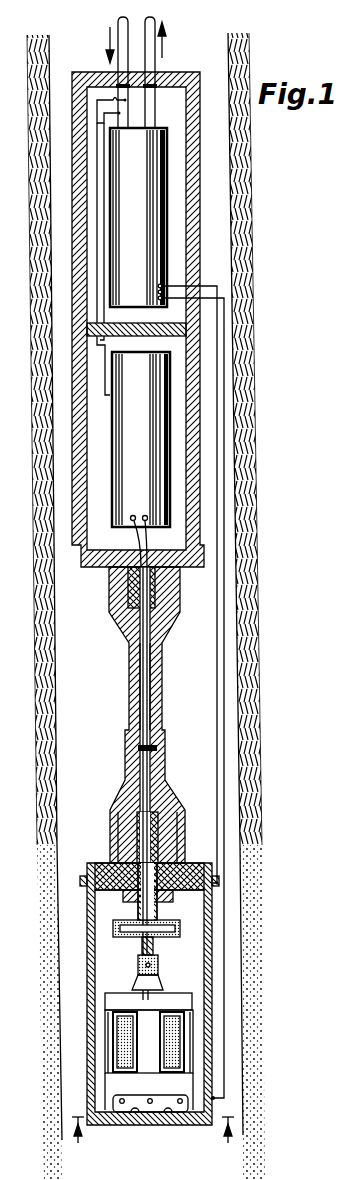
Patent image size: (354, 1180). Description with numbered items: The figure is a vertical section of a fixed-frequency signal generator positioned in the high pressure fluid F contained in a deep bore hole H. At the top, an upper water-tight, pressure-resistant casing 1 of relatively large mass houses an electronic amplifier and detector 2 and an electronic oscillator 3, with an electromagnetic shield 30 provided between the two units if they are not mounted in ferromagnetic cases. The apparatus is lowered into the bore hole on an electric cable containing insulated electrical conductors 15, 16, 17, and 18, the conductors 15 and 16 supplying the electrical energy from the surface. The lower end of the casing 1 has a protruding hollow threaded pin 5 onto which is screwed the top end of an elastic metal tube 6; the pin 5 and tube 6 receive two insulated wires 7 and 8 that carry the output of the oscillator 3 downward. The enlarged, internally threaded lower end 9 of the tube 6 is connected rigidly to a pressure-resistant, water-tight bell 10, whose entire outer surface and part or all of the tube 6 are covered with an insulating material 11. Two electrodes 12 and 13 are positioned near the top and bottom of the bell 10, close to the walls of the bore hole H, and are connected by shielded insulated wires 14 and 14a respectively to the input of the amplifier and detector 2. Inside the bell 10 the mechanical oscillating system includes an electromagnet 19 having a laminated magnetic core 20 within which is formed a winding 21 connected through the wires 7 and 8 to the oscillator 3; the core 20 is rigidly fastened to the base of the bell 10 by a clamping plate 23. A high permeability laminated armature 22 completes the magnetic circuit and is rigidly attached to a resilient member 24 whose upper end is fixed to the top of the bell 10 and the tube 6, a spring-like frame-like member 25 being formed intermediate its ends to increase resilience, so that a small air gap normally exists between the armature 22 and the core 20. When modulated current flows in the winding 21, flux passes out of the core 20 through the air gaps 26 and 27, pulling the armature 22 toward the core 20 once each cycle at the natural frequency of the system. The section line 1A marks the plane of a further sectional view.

The casing 1 is at (203, 470).
The amplifier and detector 2 is at (165, 192).
The oscillator 3 is at (168, 408).
The hollow threaded pin 5 is at (140, 612).
The metal tube 6 is at (158, 712).
The insulated wire 7 is at (156, 682).
The insulated wire 8 is at (130, 689).
The lower end of tube 9 is at (125, 803).
The bell 10 is at (210, 956).
The insulating material 11 is at (205, 1021).
The electrode 12 is at (215, 881).
The electrode 13 is at (214, 1100).
The shielded insulated wire 14 is at (212, 792).
The shielded insulated wire 14a is at (228, 822).
The insulated electrical conductor 15 is at (118, 72).
The insulated electrical conductor 16 is at (128, 22).
The insulated electrical conductor 17 is at (146, 18).
The insulated electrical conductor 18 is at (162, 70).
The electromagnet 19 is at (195, 1046).
The laminated magnetic core 20 is at (188, 1073).
The winding 21 is at (200, 1001).
The laminated armature 22 is at (107, 1005).
The clamping plate 23 is at (177, 1113).
The resilient member 24 is at (180, 900).
The frame-like member 25 is at (178, 929).
The air gap 26 is at (118, 1012).
The air gap 27 is at (176, 1012).
The electromagnetic shield 30 is at (187, 335).
The bore hole H is at (215, 246).
The fluid F is at (193, 633).
The section line 1A is at (148, 1143).